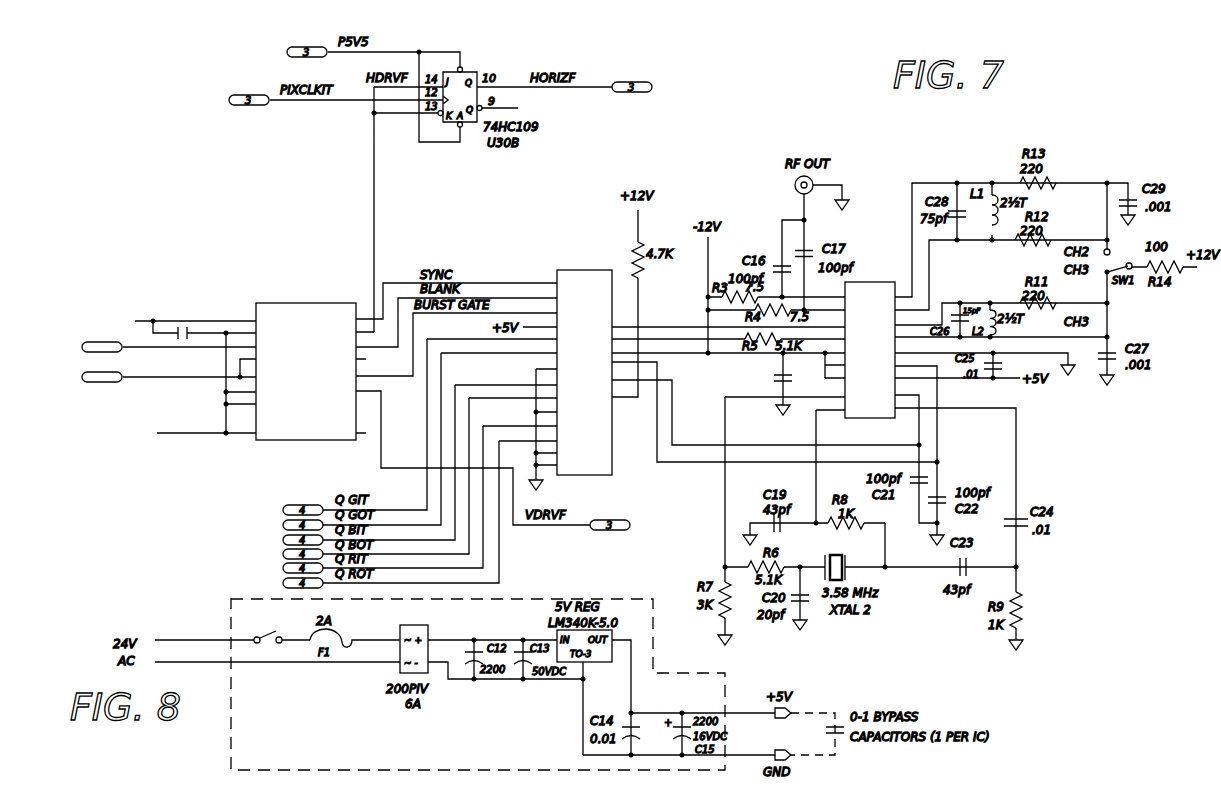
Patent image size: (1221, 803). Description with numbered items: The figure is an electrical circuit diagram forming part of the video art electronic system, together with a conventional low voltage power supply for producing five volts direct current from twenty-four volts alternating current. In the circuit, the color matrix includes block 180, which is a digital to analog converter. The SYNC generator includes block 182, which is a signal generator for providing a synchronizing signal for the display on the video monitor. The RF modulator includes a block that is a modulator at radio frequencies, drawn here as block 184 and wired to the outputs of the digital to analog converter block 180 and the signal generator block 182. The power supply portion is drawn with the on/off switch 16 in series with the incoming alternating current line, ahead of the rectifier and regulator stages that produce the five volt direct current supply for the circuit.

In FIG. 7, the signal generator 182 is at (257, 303).
In FIG. 7, the digital to analog converter 180 is at (606, 458).
In FIG. 7, the RF modulator 184 is at (896, 416).
In FIG. 8, the on/off switch 16 is at (255, 634).